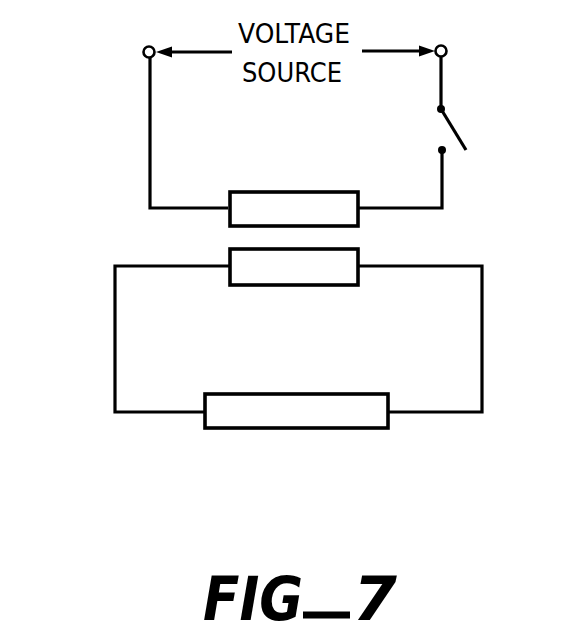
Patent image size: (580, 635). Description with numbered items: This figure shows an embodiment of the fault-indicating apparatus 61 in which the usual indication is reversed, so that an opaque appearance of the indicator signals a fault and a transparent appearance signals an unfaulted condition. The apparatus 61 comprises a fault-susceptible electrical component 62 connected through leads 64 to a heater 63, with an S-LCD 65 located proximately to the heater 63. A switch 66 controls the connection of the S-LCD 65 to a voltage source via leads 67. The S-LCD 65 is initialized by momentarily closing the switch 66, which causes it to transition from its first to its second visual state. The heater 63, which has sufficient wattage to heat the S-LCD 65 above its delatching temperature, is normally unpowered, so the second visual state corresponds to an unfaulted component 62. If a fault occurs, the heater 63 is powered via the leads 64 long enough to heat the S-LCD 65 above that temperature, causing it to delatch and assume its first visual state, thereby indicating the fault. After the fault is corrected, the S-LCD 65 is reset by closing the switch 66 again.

The apparatus 61 is at (112, 205).
The fault-susceptible electrical component 62 is at (292, 432).
The heater 63 is at (292, 288).
The leads 64 is at (175, 414).
The S-LCD 65 is at (305, 190).
The switch 66 is at (463, 142).
The leads 67 is at (143, 53).